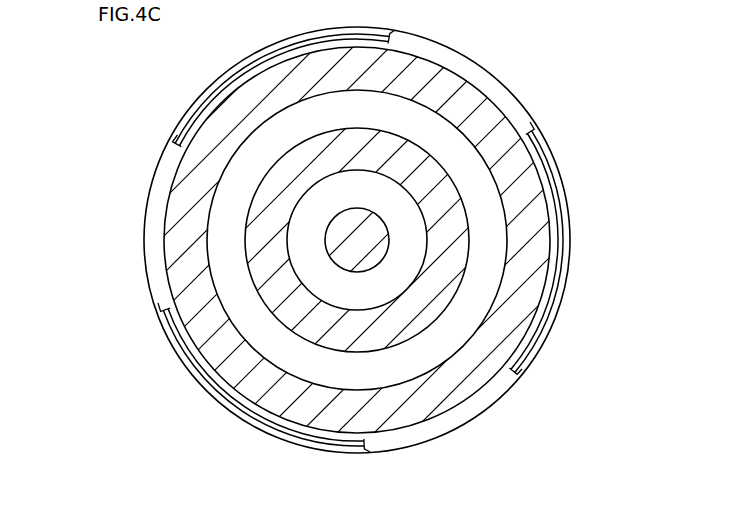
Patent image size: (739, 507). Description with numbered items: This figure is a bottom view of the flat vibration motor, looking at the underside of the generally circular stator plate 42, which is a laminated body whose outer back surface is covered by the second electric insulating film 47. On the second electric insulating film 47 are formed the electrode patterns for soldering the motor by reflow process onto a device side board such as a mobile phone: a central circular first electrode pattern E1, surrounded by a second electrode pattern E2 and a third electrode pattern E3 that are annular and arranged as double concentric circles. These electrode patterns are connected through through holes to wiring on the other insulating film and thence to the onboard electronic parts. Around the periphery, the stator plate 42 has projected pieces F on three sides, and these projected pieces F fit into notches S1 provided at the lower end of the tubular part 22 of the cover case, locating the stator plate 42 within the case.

The stator plate 42 is at (156, 162).
The tubular part 22 is at (187, 378).
The second electric insulating film 47 is at (369, 253).
The first electrode pattern E1 is at (333, 228).
The second electrode pattern E2 is at (456, 227).
The third electrode pattern E3 is at (460, 386).
The notch S1 is at (393, 36).
The projected piece F is at (492, 92).